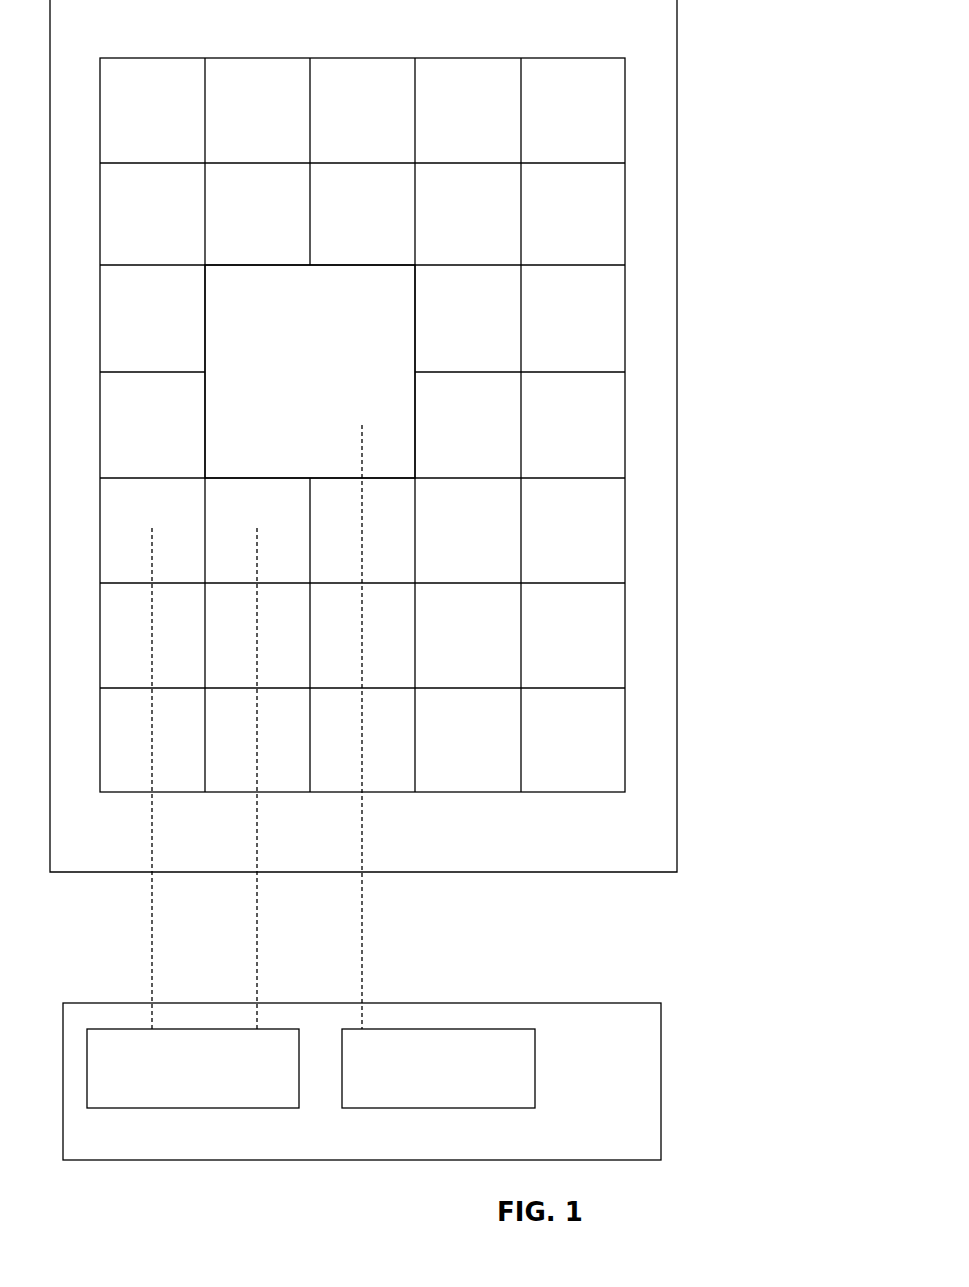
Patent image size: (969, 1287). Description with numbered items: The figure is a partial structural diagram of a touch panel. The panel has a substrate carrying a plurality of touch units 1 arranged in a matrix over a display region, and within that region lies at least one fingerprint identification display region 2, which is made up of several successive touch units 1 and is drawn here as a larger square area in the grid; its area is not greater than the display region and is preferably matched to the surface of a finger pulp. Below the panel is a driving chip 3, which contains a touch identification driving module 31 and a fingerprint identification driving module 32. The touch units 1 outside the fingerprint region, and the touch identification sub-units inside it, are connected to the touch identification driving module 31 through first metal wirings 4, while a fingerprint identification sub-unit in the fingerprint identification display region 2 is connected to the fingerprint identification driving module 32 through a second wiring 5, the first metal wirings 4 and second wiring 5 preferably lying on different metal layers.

The touch unit 1 is at (572, 108).
The fingerprint identification display region 2 is at (336, 373).
The driving chip 3 is at (362, 1064).
The touch identification driving module 31 is at (192, 1108).
The fingerprint identification driving module 32 is at (438, 1108).
The first metal wirings 4 is at (152, 925).
The second wiring 5 is at (362, 947).